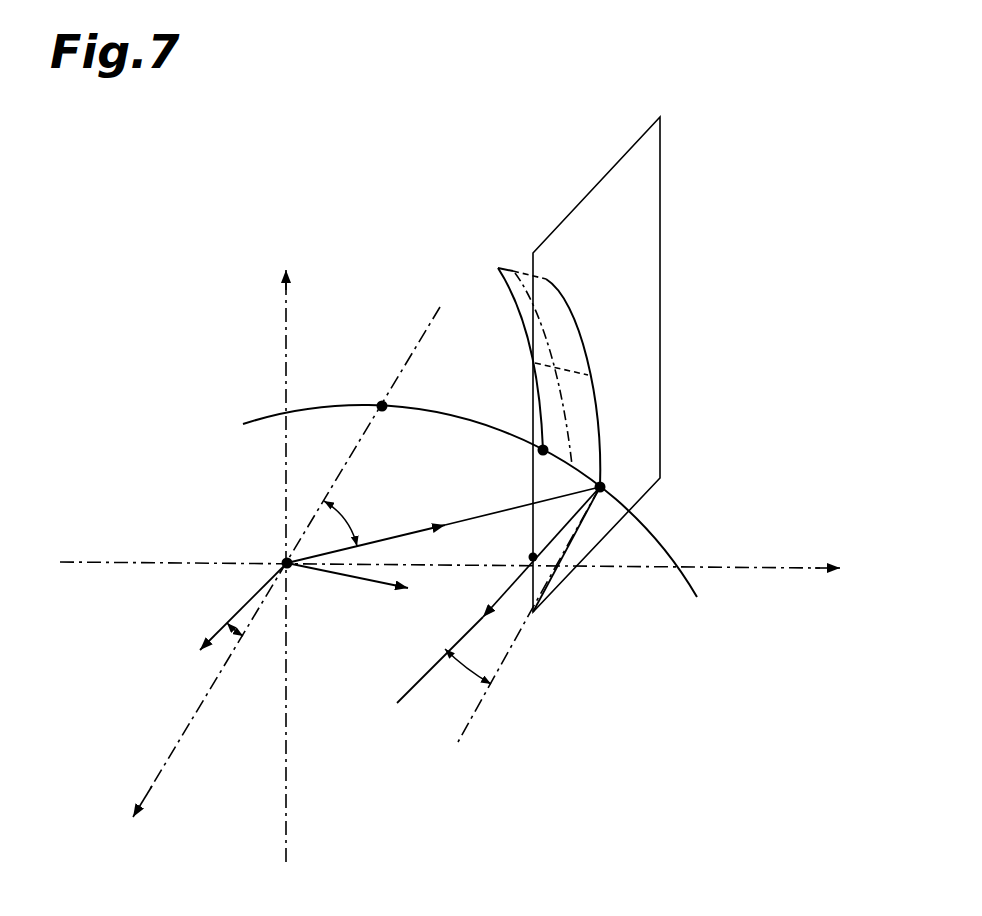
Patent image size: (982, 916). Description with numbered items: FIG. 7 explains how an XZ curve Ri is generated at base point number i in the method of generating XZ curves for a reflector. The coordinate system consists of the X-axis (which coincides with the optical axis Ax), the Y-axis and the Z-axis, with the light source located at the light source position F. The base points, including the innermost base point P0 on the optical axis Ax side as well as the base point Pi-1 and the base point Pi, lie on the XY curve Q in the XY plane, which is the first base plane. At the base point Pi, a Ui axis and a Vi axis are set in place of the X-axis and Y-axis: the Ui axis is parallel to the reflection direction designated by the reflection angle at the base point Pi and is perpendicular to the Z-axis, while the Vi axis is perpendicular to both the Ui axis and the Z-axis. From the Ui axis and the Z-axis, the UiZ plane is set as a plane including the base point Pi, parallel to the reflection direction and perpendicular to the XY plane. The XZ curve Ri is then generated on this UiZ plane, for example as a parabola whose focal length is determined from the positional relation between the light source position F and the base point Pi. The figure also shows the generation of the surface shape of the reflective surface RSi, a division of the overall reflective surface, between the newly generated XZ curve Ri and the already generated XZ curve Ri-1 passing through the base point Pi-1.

The Z-axis Z is at (268, 564).
The Y-axis Y is at (461, 577).
The X-axis X is at (271, 585).
The light source position F is at (284, 561).
The Vi axis Vi is at (347, 593).
The Ui axis Ui is at (227, 622).
The XY curve Q is at (688, 582).
The base point P0 is at (381, 403).
The UiZ plane UiZ is at (643, 217).
The XZ curve Ri-1 is at (513, 310).
The XZ curve Ri is at (600, 403).
The reflective surface RSi is at (515, 272).
The base point Pi-1 is at (540, 451).
The base point Pi is at (605, 488).
The optical axis Ax is at (529, 624).